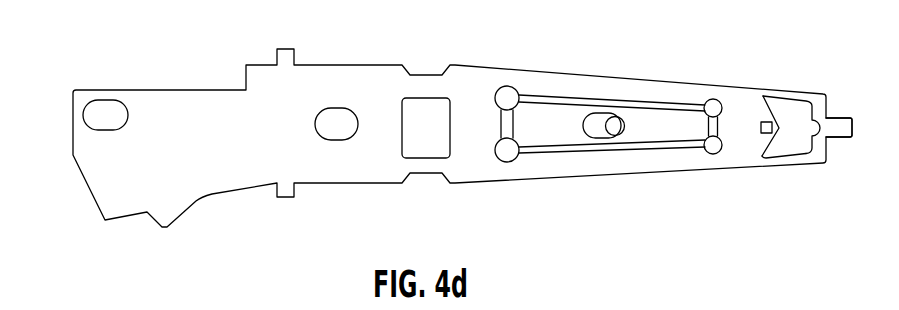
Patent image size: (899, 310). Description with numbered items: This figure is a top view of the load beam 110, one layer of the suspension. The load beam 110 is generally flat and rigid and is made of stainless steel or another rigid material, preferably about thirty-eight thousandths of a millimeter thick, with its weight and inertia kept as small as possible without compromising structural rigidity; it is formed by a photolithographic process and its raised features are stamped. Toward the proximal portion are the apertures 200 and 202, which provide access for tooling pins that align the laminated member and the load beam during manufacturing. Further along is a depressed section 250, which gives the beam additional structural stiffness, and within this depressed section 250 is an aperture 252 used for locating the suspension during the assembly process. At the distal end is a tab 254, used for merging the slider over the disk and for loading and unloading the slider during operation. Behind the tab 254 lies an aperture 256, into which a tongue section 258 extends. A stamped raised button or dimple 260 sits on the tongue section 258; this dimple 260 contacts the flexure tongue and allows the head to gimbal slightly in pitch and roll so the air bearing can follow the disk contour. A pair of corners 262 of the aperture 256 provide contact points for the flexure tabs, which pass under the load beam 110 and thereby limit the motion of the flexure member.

The load beam 110 is at (350, 202).
The aperture 200 is at (316, 122).
The aperture 202 is at (621, 138).
The depressed section 250 is at (540, 120).
The aperture 252 is at (600, 113).
The tab 254 is at (839, 137).
The aperture 256 is at (800, 112).
The tongue section 258 is at (780, 131).
The dimple 260 is at (761, 122).
The corners 262 is at (777, 125).